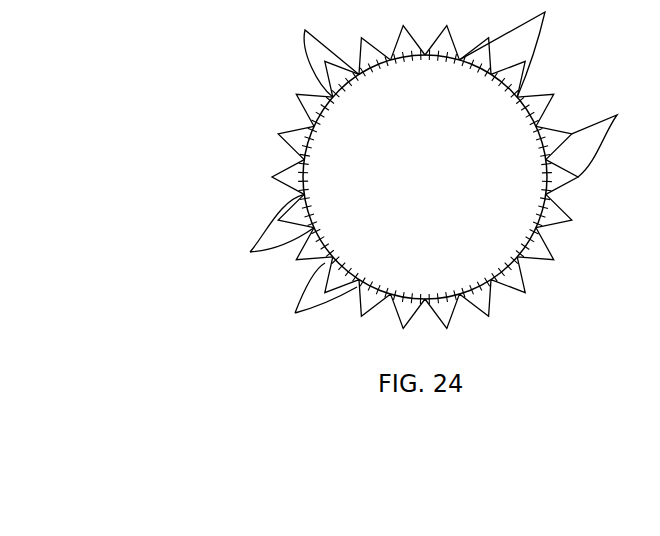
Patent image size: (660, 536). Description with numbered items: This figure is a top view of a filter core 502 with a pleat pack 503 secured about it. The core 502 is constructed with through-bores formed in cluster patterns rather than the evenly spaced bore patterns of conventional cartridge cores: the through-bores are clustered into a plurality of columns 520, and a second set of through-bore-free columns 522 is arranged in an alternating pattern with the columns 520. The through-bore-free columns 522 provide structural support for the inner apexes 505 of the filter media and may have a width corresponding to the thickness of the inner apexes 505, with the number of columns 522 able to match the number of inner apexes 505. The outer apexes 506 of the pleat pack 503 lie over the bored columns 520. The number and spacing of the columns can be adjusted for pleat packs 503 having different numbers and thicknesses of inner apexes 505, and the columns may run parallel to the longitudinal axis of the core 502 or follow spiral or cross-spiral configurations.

The core 502 is at (443, 161).
The pleat pack 503 is at (263, 151).
The inner apexes 505 is at (250, 252).
The outer apexes 506 is at (617, 115).
The columns 520 is at (452, 35).
The through-bore-free columns 522 is at (305, 30).